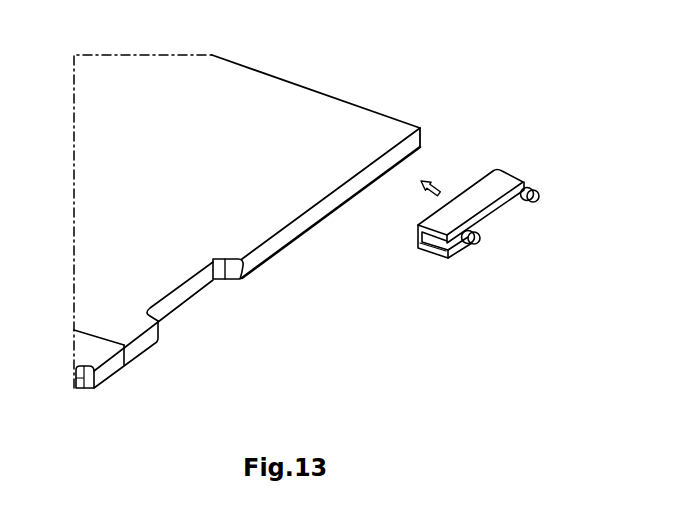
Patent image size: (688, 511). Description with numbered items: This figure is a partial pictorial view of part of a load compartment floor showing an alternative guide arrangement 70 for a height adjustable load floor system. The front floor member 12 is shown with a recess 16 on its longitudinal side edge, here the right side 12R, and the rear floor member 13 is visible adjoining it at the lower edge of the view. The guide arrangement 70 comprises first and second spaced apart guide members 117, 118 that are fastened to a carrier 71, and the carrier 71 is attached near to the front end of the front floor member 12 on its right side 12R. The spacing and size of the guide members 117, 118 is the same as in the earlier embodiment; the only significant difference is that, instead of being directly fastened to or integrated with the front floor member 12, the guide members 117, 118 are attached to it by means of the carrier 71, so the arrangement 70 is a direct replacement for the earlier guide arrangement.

The front floor member 12 is at (330, 217).
The right side 12R is at (295, 233).
The recess 16 is at (198, 292).
The rear floor member 13 is at (111, 377).
The carrier 71 is at (508, 175).
The guide arrangement 70 is at (435, 253).
The first guide member 117 is at (530, 202).
The second guide member 118 is at (472, 245).